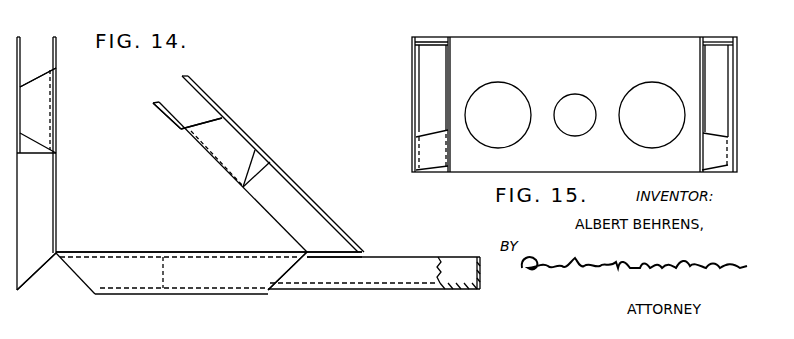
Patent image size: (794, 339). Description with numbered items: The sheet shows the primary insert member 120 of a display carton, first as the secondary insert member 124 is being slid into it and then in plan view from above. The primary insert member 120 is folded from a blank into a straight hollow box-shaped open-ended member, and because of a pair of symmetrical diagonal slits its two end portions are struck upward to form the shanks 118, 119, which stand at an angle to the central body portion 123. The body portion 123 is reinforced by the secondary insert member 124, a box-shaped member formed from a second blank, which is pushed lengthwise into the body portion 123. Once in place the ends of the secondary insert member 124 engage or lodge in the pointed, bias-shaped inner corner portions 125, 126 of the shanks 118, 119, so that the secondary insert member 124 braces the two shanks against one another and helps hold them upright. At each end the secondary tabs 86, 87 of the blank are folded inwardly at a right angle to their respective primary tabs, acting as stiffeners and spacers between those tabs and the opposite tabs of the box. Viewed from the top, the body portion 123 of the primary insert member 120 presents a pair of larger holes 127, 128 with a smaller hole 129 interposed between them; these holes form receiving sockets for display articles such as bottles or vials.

In FIG. 14, the secondary tab 86 is at (206, 124).
In FIG. 15, the secondary tab 86 is at (720, 150).
In FIG. 14, the secondary tab 87 is at (35, 76).
In FIG. 15, the secondary tab 87 is at (423, 152).
In FIG. 14, the shank 118 is at (298, 187).
In FIG. 14, the shank 119 is at (62, 117).
In FIG. 14, the primary insert member 120 is at (232, 250).
In FIG. 15, the primary insert member 120 is at (512, 35).
In FIG. 14, the body portion 123 is at (127, 268).
In FIG. 14, the secondary insert member 124 is at (405, 258).
In FIG. 14, the inner corner portion 125 is at (33, 266).
In FIG. 14, the inner corner portion 126 is at (343, 246).
In FIG. 15, the larger hole 127 is at (493, 97).
In FIG. 15, the larger hole 128 is at (645, 90).
In FIG. 15, the smaller hole 129 is at (575, 103).